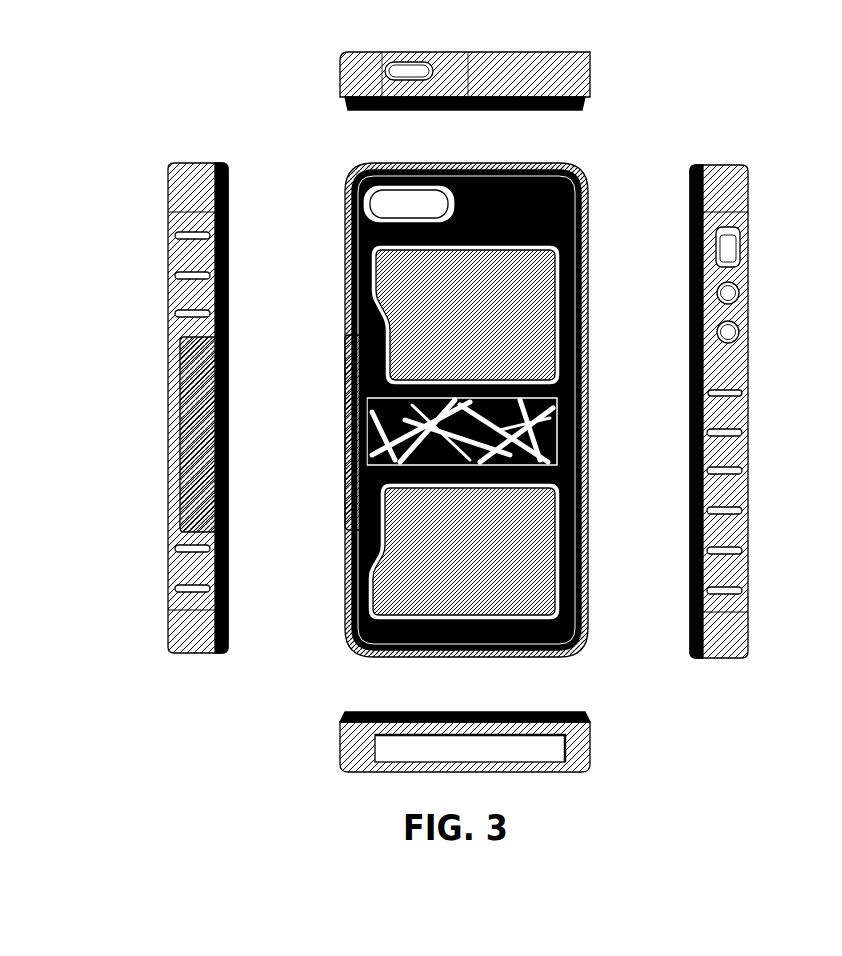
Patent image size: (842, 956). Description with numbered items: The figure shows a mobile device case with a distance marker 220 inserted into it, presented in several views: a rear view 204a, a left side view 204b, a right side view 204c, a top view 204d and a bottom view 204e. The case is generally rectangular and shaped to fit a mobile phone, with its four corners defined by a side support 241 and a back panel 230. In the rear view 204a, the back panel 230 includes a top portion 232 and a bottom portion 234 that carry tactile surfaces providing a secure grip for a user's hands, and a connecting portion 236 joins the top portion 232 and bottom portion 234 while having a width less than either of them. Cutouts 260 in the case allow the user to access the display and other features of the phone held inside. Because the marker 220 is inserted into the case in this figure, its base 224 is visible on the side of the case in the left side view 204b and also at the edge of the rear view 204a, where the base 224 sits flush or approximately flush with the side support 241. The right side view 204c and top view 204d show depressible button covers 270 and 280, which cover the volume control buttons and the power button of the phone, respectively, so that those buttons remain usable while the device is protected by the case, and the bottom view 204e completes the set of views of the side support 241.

The rear view 204a is at (358, 153).
The left side view 204b is at (178, 154).
The right side view 204c is at (706, 152).
The top view 204d is at (336, 70).
The bottom view 204e is at (334, 742).
The distance marker 220 is at (354, 431).
The base 224 is at (551, 413).
The back panel 230 is at (552, 216).
The top portion 232 is at (546, 322).
The bottom portion 234 is at (540, 530).
The connecting portion 236 is at (568, 441).
The side support 241 is at (570, 74).
The cutouts 260 is at (383, 205).
The depressible button cover 270 is at (751, 284).
The depressible button cover 280 is at (413, 81).